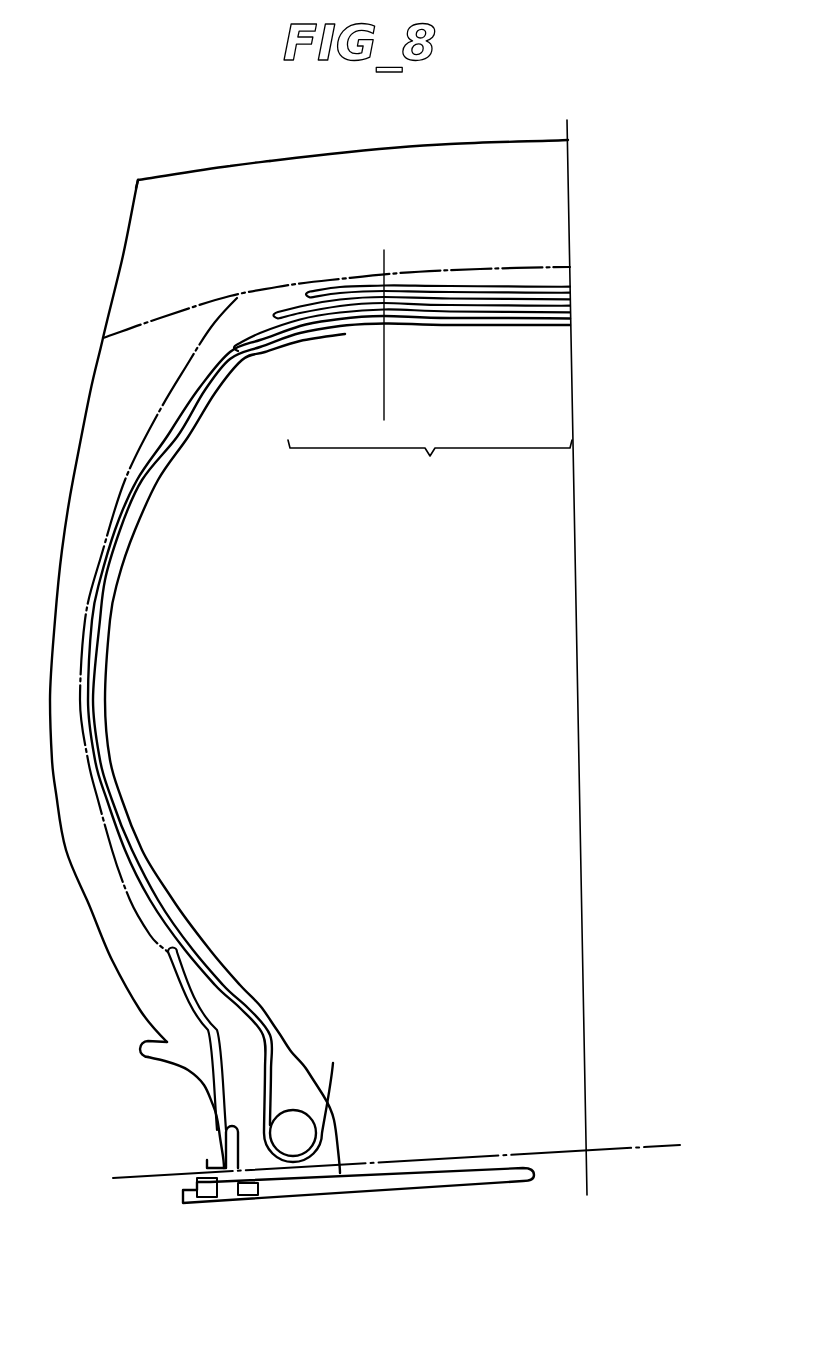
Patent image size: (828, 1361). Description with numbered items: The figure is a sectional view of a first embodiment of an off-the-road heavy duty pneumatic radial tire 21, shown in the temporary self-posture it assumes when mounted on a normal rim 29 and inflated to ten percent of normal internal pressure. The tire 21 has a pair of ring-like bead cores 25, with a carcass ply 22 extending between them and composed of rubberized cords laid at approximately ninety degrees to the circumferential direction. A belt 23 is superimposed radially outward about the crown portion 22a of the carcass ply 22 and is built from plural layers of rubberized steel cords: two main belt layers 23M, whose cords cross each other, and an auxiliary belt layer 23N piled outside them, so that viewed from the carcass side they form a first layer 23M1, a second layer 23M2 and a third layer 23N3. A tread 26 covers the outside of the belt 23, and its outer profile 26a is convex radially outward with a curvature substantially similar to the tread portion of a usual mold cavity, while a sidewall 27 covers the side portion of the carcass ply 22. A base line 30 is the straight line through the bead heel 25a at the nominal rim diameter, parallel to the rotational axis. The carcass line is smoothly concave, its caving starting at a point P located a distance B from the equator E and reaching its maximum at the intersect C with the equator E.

The heavy duty pneumatic radial tire 21 is at (522, 116).
The carcass ply 22 is at (160, 453).
The crown portion of the carcass ply 22a is at (430, 467).
The belt 23 is at (425, 287).
The main belt layers 23M is at (711, 301).
The first layer 23M1 is at (572, 303).
The second layer 23M2 is at (572, 290).
The auxiliary belt layer 23N is at (711, 247).
The third layer 23N3 is at (572, 268).
The bead core 25 is at (307, 1128).
The bead heel 25a is at (235, 1148).
The tread 26 is at (362, 148).
The outer profile of the tread 26a is at (232, 173).
The sidewall 27 is at (85, 400).
The normal rim 29 is at (236, 1210).
The base line 30 is at (654, 1147).
The distance B is at (384, 411).
The intersect C is at (572, 325).
The equator E is at (572, 128).
The point P is at (384, 322).